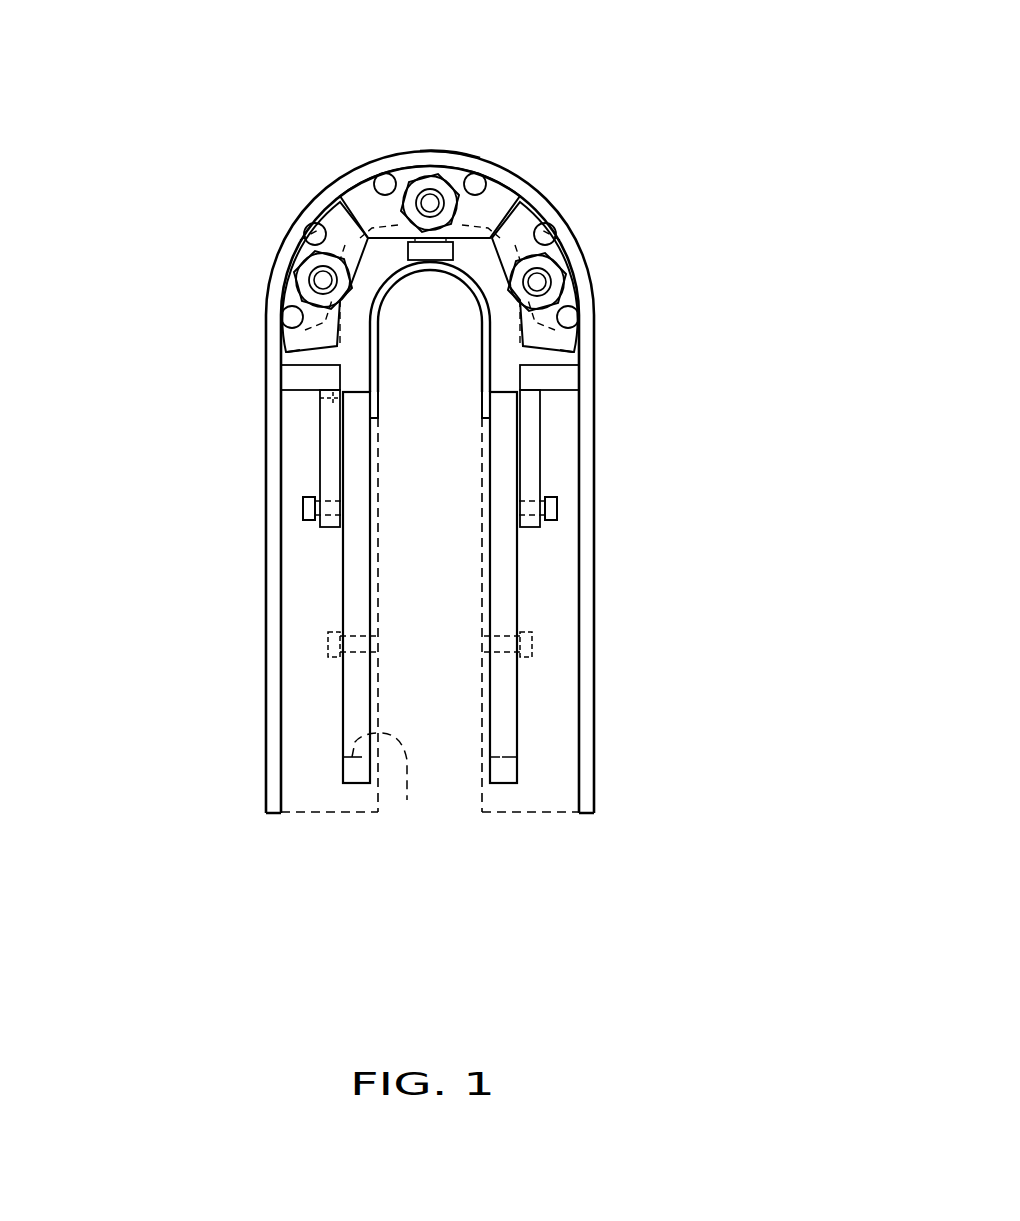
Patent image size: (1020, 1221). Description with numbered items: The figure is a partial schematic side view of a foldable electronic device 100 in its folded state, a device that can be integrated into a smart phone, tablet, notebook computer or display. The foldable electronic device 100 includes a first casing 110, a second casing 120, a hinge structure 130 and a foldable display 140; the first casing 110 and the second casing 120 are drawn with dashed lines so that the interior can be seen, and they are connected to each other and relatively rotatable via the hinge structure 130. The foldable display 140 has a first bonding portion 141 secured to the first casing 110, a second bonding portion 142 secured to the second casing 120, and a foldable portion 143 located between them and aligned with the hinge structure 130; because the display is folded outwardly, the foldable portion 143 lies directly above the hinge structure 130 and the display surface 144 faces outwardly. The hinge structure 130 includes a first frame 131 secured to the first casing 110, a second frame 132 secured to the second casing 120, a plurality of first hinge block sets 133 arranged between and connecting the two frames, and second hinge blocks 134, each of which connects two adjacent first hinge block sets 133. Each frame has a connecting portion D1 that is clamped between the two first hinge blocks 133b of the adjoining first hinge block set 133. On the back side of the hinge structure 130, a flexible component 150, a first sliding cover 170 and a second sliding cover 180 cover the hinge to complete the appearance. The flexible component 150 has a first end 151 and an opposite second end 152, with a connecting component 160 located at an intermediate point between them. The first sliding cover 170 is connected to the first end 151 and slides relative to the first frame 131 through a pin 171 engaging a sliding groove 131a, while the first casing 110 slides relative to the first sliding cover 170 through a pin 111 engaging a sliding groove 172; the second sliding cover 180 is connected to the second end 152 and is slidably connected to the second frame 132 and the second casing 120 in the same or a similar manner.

The foldable electronic device 100 is at (752, 955).
The first casing 110 is at (322, 812).
The pin 111 is at (330, 642).
The second casing 120 is at (538, 812).
The hinge structure 130 is at (430, 156).
The first frame 131 is at (293, 377).
The sliding groove 131a is at (325, 400).
The second frame 132 is at (567, 377).
The first hinge block set 133 is at (422, 195).
The first hinge block 133b is at (300, 250).
The second hinge block 134 is at (373, 198).
The foldable display 140 is at (432, 410).
The first bonding portion 141 is at (275, 572).
The second bonding portion 142 is at (586, 572).
The foldable portion 143 is at (503, 180).
The display surface 144 is at (467, 140).
The flexible component 150 is at (455, 278).
The first end 151 is at (374, 400).
The second end 152 is at (486, 400).
The connecting component 160 is at (430, 257).
The first sliding cover 170 is at (362, 550).
The pin 171 is at (303, 507).
The sliding groove 172 is at (407, 800).
The second sliding cover 180 is at (498, 550).
The connecting portion D1 is at (290, 354).